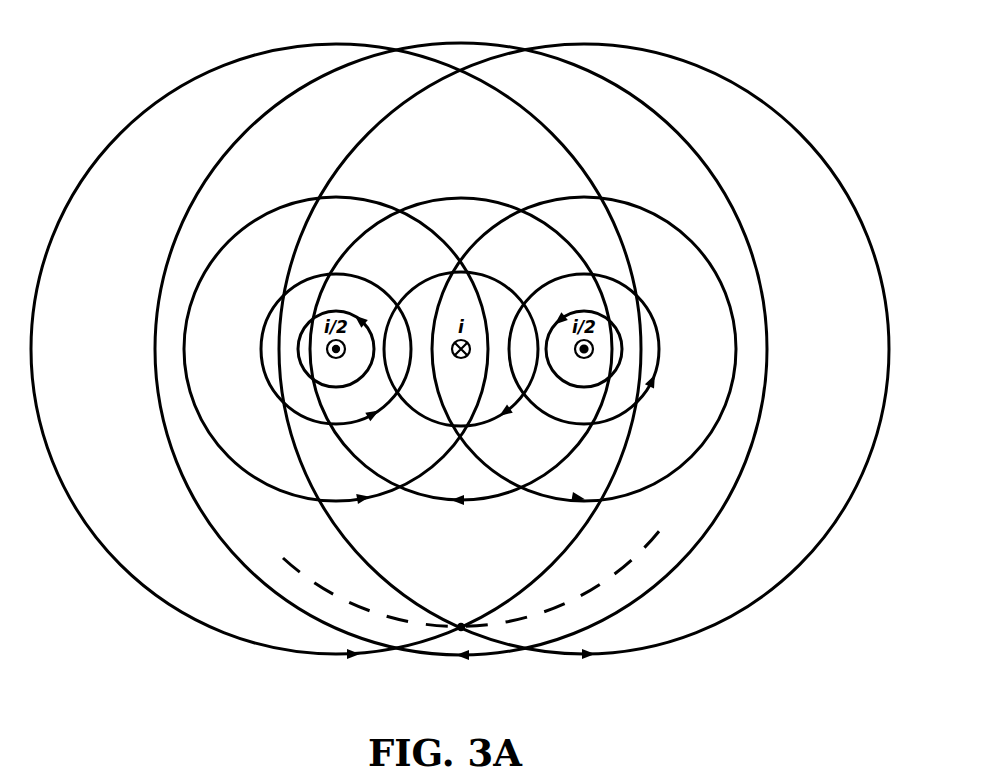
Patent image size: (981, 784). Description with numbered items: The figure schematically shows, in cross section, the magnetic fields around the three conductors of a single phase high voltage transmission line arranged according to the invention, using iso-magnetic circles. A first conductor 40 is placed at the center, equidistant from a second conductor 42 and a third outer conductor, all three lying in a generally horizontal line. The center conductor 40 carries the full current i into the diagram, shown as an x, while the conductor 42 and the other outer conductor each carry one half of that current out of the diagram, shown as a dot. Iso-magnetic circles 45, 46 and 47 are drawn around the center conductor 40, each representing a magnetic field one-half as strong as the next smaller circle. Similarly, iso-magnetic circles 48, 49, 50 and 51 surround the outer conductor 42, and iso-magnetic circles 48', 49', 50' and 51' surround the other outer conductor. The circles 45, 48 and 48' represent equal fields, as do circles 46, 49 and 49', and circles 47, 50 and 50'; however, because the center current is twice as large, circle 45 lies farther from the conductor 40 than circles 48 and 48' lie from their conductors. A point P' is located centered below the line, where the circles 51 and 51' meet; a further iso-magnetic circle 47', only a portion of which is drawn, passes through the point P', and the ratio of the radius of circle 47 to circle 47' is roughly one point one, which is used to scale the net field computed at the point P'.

The first conductor 40 is at (458, 362).
The second conductor 42 is at (340, 362).
The iso-magnetic circle 45 is at (495, 281).
The iso-magnetic circle 46 is at (473, 197).
The iso-magnetic circle 47 is at (461, 351).
The iso-magnetic circle 47' is at (471, 578).
The iso-magnetic circle 48 is at (303, 364).
The iso-magnetic circle 48' is at (619, 328).
The iso-magnetic circle 49 is at (314, 349).
The iso-magnetic circle 49' is at (602, 350).
The iso-magnetic circle 50 is at (336, 365).
The iso-magnetic circle 50' is at (584, 359).
The iso-magnetic circle 51 is at (336, 351).
The iso-magnetic circle 51' is at (584, 351).
The point P' is at (454, 661).